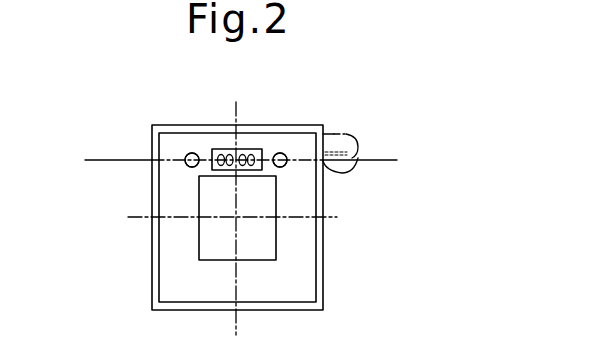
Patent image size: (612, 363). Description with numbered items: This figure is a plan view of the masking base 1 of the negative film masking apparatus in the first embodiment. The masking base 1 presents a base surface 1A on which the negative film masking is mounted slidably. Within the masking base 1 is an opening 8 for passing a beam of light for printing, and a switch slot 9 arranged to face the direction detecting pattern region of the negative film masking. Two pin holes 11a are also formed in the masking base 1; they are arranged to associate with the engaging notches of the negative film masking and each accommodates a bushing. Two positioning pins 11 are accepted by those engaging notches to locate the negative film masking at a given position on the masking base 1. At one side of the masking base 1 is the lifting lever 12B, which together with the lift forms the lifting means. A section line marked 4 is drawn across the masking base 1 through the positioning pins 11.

The masking base 1 is at (330, 288).
The base surface 1A is at (172, 268).
The section line 4- 4 is at (92, 166).
The opening 8 is at (266, 232).
The switch slot 9 is at (245, 148).
The positioning pins 11 is at (190, 152).
The pin holes 11a is at (184, 157).
The lifting lever 12B is at (358, 158).